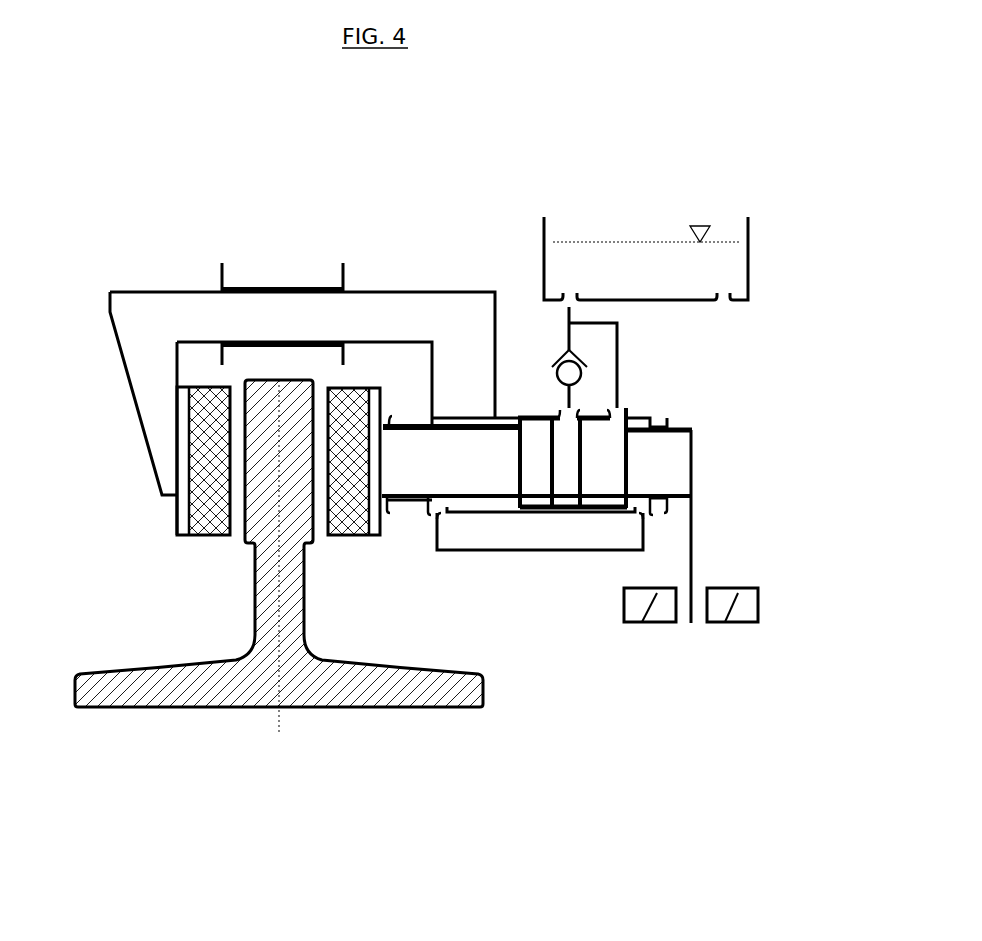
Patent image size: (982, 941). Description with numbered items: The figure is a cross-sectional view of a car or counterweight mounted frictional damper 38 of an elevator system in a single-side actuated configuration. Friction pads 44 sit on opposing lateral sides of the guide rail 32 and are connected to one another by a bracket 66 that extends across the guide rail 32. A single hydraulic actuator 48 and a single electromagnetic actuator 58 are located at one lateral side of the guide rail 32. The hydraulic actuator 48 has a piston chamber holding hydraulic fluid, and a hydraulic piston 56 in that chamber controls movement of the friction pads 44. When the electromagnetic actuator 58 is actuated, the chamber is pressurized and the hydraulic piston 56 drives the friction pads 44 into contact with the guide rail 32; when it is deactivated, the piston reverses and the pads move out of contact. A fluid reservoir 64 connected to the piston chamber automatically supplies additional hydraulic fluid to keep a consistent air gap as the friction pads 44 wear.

The guide rail 32 is at (275, 648).
The frictional damper 38 is at (565, 188).
The friction pads 44 is at (215, 483).
The hydraulic actuator 48 is at (465, 483).
The hydraulic piston 56 is at (433, 476).
The electromagnetic actuator 58 is at (652, 462).
The fluid reservoir 64 is at (642, 271).
The bracket 66 is at (277, 315).